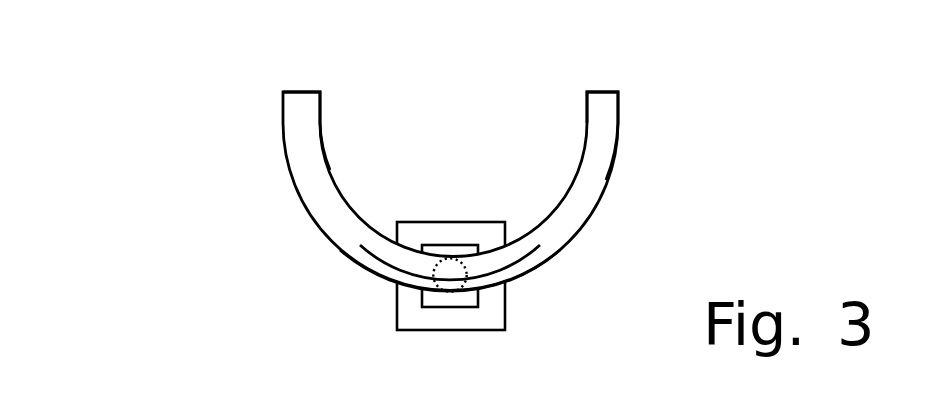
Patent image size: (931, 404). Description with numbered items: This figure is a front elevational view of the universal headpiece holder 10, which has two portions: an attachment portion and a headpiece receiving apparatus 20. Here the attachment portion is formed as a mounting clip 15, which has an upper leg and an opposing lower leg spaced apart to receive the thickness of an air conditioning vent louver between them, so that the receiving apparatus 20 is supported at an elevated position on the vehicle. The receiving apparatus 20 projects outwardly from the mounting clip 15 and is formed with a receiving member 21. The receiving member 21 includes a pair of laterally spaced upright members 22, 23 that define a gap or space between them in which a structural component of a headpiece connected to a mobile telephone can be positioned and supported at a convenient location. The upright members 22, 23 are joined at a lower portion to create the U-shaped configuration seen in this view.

The holder 10 is at (190, 73).
The mounting clip 15 is at (410, 317).
The headpiece receiving apparatus 20 is at (658, 83).
The receiving member 21 is at (350, 233).
The upright member 22 is at (300, 131).
The upright member 23 is at (605, 146).